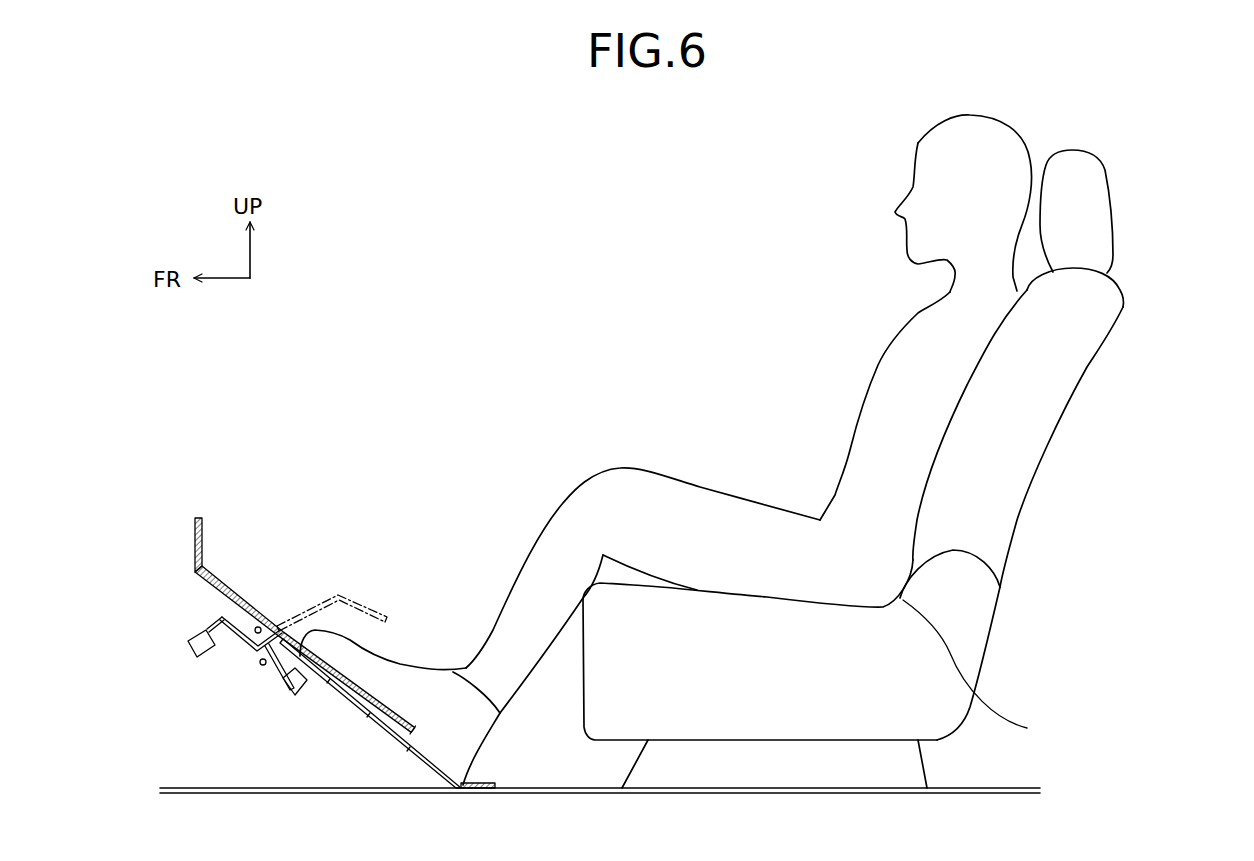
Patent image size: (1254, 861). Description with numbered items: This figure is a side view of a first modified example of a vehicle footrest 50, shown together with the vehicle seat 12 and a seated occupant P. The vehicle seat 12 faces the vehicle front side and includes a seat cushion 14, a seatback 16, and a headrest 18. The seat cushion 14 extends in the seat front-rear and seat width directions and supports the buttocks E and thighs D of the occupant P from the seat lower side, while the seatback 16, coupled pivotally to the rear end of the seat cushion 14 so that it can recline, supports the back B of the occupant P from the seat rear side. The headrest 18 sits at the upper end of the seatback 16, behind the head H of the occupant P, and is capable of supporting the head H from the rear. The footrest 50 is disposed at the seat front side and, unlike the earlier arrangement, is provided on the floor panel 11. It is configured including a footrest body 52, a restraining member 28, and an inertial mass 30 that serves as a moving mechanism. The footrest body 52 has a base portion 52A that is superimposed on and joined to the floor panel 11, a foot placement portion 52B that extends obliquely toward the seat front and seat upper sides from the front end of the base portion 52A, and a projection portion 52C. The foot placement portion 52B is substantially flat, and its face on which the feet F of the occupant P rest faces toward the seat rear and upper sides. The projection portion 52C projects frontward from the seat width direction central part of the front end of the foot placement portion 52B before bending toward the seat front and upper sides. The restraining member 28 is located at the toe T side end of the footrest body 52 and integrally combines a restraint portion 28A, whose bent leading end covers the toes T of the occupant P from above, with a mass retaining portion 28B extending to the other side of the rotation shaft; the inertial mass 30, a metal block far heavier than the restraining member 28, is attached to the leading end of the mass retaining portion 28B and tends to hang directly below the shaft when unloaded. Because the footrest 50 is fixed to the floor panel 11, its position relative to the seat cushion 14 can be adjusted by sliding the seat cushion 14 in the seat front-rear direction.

The floor panel 11 is at (993, 787).
The vehicle seat 12 is at (889, 528).
The seat cushion 14 is at (987, 652).
The seatback 16 is at (1090, 363).
The headrest 18 is at (1117, 222).
The restraining member 28 is at (244, 640).
The restraint portion 28A is at (137, 538).
The mass retaining portion 28B is at (286, 696).
The inertial mass 30 is at (280, 694).
The vehicle footrest 50 is at (323, 647).
The footrest body 52 is at (381, 736).
The base portion 52A is at (487, 780).
The foot placement portion 52B is at (382, 741).
The projection portion 52C is at (227, 645).
The occupant P is at (731, 448).
The head H is at (1025, 143).
The back B is at (967, 385).
The thighs D is at (700, 487).
The buttocks E is at (978, 671).
The feet F is at (383, 653).
The toes T is at (332, 625).